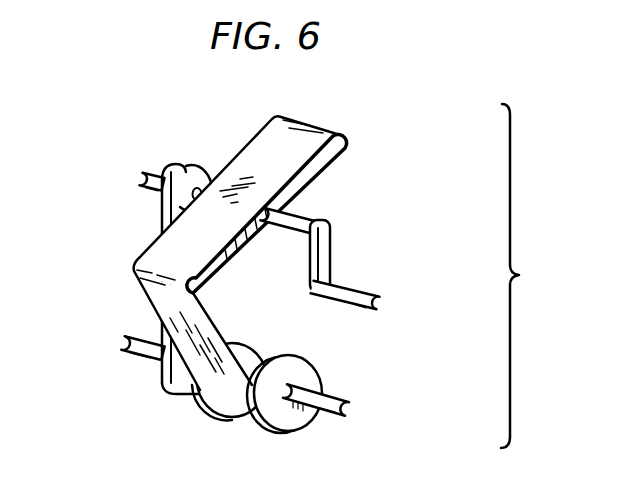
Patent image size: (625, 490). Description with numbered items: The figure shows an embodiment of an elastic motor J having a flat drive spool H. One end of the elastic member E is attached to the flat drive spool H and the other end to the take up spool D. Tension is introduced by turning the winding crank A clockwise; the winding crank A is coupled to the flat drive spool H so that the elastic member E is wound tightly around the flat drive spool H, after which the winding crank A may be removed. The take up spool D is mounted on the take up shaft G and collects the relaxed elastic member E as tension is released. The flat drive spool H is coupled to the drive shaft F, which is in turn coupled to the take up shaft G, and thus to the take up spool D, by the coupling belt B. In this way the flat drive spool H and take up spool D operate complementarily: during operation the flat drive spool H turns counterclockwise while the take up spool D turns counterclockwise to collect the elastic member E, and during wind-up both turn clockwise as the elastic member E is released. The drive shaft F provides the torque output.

The winding crank A is at (334, 263).
The coupling belt B is at (148, 218).
The take up spool D is at (312, 364).
The elastic member E is at (322, 132).
The drive shaft F is at (134, 190).
The take up shaft G is at (357, 407).
The flat drive spool H is at (306, 176).
The elastic motor J is at (519, 276).